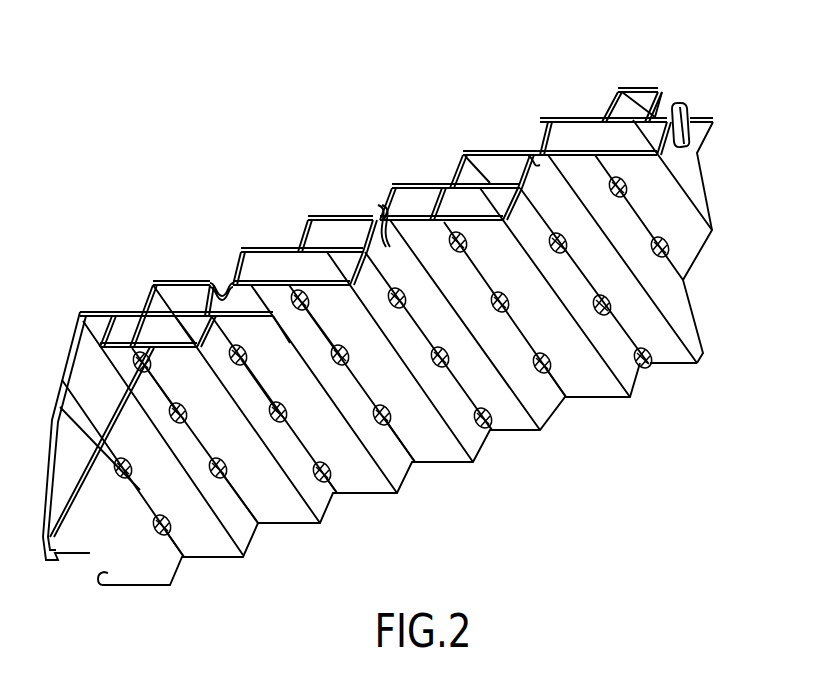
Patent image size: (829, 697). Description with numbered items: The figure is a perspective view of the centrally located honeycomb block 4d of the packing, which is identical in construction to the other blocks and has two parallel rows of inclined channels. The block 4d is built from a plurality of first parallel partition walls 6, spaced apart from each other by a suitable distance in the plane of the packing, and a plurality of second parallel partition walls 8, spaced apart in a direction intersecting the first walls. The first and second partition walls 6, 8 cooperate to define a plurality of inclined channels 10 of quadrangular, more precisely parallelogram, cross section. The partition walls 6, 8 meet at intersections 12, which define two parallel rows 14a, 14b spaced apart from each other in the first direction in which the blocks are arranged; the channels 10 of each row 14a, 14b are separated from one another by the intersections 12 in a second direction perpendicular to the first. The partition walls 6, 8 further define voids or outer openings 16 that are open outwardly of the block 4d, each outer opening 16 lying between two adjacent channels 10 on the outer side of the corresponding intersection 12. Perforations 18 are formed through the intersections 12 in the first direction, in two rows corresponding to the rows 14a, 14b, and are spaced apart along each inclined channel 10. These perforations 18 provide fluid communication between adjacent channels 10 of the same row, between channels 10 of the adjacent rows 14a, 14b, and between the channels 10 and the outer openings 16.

The honeycomb block 4d is at (506, 483).
The first parallel partition walls 6 is at (300, 235).
The second parallel partition walls 8 is at (318, 213).
The inclined channels 10 is at (173, 330).
The intersections 12 is at (130, 308).
The row 14a is at (666, 98).
The row 14b is at (702, 115).
The outer openings 16 is at (125, 305).
The perforations 18 is at (152, 363).